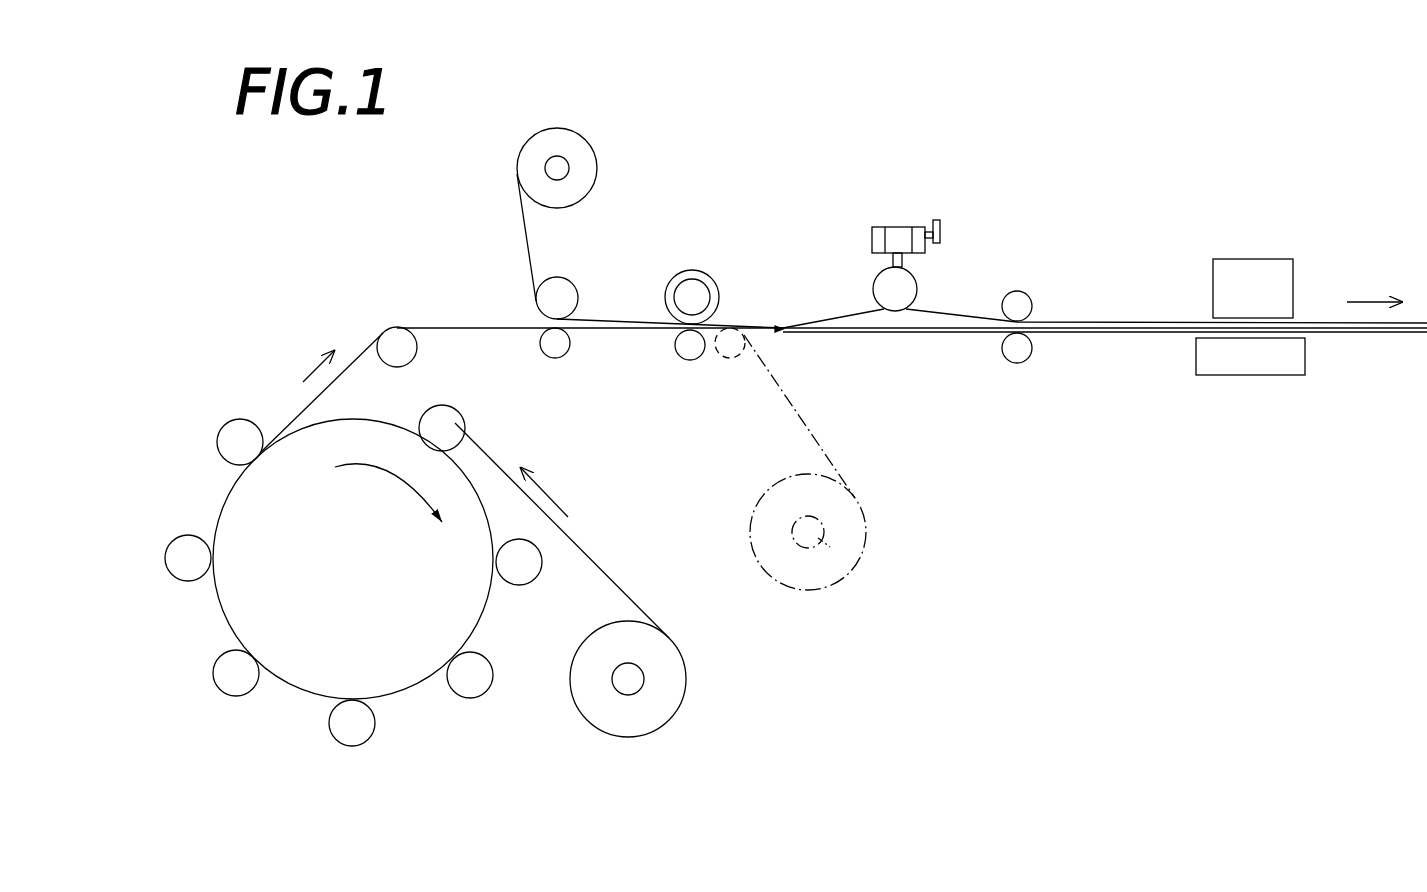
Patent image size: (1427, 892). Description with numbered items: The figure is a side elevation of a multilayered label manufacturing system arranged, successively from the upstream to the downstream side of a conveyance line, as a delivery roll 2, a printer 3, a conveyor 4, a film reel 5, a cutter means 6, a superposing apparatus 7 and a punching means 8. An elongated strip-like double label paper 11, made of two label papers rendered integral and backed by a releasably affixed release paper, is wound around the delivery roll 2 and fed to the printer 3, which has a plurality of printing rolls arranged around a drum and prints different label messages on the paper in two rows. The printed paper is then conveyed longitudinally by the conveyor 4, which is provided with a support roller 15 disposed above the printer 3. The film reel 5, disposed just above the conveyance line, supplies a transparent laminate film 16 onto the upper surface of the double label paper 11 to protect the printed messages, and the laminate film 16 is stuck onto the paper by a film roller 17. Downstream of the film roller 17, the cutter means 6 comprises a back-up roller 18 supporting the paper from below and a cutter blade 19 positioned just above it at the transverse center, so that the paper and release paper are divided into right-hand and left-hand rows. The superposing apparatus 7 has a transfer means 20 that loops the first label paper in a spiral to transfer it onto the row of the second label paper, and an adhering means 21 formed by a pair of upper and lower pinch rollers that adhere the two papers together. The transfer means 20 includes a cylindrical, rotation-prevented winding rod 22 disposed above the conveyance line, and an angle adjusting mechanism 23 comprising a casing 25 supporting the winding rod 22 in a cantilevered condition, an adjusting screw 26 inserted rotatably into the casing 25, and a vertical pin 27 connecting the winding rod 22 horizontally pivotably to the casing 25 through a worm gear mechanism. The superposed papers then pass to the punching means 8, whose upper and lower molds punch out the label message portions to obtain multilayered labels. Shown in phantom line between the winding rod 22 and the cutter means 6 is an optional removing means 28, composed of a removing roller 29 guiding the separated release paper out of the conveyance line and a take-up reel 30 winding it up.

The delivery roll 2 is at (640, 674).
The printer 3 is at (212, 508).
The conveyor 4 is at (445, 324).
The film reel 5 is at (545, 168).
The cutter means 6 is at (690, 268).
The superposing apparatus 7 is at (960, 347).
The punching means 8 is at (1258, 257).
The double label paper 11 is at (605, 572).
The support roller 15 is at (393, 338).
The laminate film 16 is at (527, 238).
The film roller 17 is at (561, 292).
The back-up roller 18 is at (684, 352).
The cutter blade 19 is at (718, 288).
The transfer means 20 is at (928, 265).
The adhering means 21 is at (1030, 294).
The winding rod 22 is at (895, 302).
The angle adjusting mechanism 23 is at (898, 225).
The casing 25 is at (872, 228).
The adjusting screw 26 is at (941, 226).
The pin 27 is at (893, 264).
The removing means 28 is at (822, 440).
The removing roller 29 is at (733, 362).
The take-up reel 30 is at (843, 555).